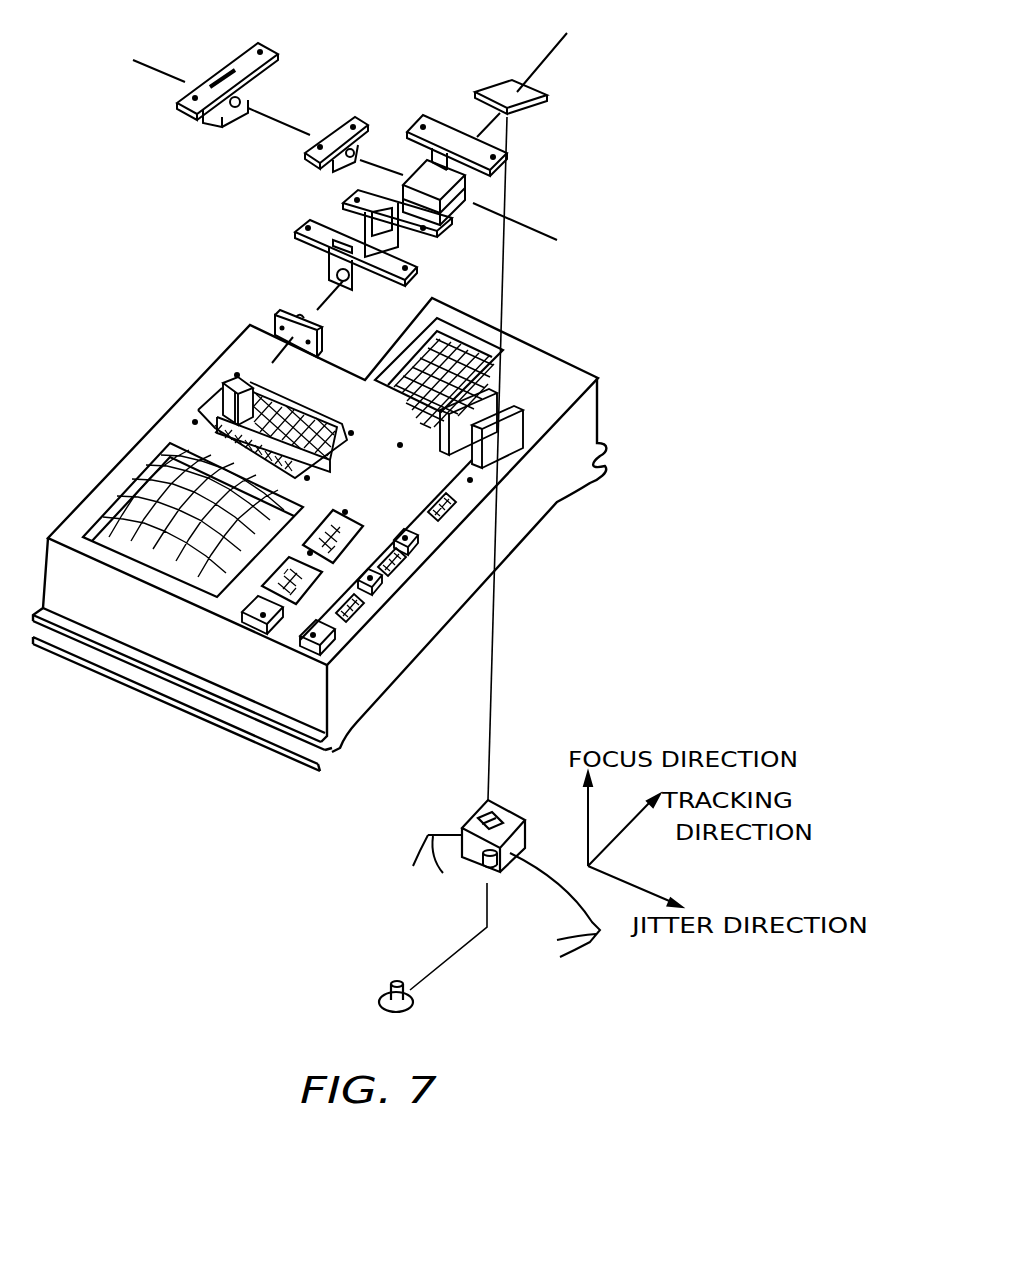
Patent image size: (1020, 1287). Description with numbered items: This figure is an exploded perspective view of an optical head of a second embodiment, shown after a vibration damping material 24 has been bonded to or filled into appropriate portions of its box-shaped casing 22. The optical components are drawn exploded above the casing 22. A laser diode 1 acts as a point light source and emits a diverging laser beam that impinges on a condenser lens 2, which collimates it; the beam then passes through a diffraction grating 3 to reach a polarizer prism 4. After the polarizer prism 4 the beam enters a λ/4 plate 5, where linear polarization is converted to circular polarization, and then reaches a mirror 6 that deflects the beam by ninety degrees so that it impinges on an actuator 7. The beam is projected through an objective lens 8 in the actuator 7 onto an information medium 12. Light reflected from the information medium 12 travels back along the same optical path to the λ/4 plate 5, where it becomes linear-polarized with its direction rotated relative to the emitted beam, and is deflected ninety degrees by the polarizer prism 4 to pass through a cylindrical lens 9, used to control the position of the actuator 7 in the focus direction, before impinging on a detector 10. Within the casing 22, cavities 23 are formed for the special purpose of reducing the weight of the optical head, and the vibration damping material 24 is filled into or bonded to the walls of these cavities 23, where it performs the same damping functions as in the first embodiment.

The laser diode 1 is at (298, 317).
The condenser lens 2 is at (325, 258).
The diffraction grating 3 is at (345, 220).
The polarizer prism 4 is at (440, 203).
The λ/4 plate 5 is at (461, 187).
The mirror 6 is at (547, 97).
The actuator 7 is at (497, 817).
The objective lens 8 is at (526, 838).
The cylindrical lens 9 is at (357, 137).
The detector 10 is at (253, 88).
The information medium 12 is at (428, 835).
The box-shaped casing 22 is at (578, 360).
The cavities 23 is at (128, 488).
The vibration damping material 24 is at (122, 495).